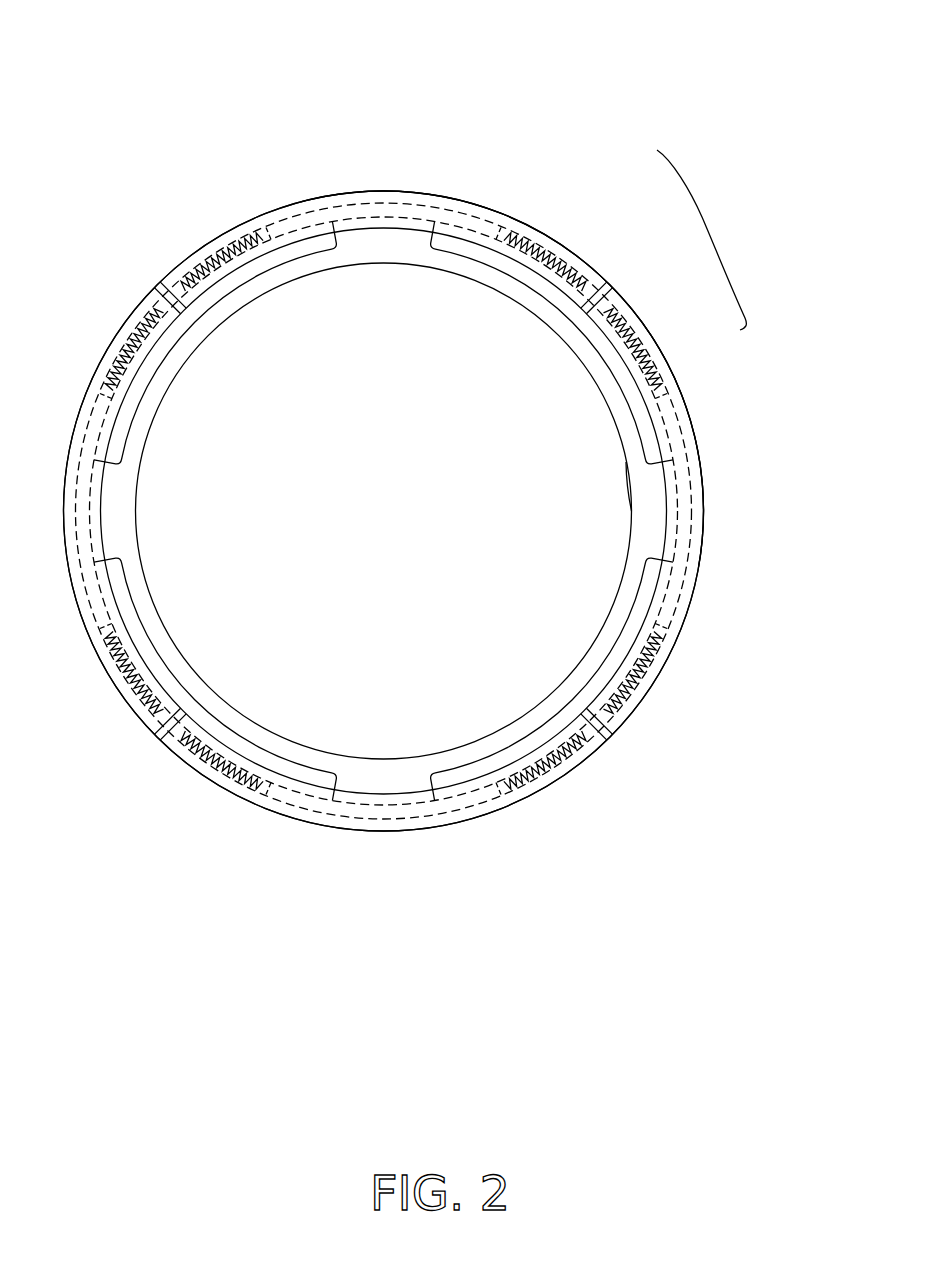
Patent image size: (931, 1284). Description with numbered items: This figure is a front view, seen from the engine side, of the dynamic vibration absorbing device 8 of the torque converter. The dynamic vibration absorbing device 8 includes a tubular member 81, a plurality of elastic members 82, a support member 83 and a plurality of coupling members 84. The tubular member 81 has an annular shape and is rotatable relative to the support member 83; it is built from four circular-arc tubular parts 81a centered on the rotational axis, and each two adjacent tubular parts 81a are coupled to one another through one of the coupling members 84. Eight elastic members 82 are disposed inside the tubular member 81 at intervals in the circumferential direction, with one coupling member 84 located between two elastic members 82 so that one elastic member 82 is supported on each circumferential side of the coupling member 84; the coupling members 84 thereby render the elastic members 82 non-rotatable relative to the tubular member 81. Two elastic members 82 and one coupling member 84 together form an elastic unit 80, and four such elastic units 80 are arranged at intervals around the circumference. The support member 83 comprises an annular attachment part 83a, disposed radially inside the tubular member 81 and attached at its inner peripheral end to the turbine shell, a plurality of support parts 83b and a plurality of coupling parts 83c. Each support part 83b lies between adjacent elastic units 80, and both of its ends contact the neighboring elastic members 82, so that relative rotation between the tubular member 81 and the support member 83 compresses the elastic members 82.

The dynamic vibration absorbing device 8 is at (378, 143).
The elastic unit 80 is at (704, 240).
The tubular member 81 is at (442, 193).
The tubular part 81a is at (523, 222).
The elastic member 82 is at (223, 248).
The support member 83 is at (545, 700).
The attachment part 83a is at (618, 603).
The support part 83b is at (692, 513).
The coupling part 83c is at (657, 531).
The coupling member 84 is at (609, 287).